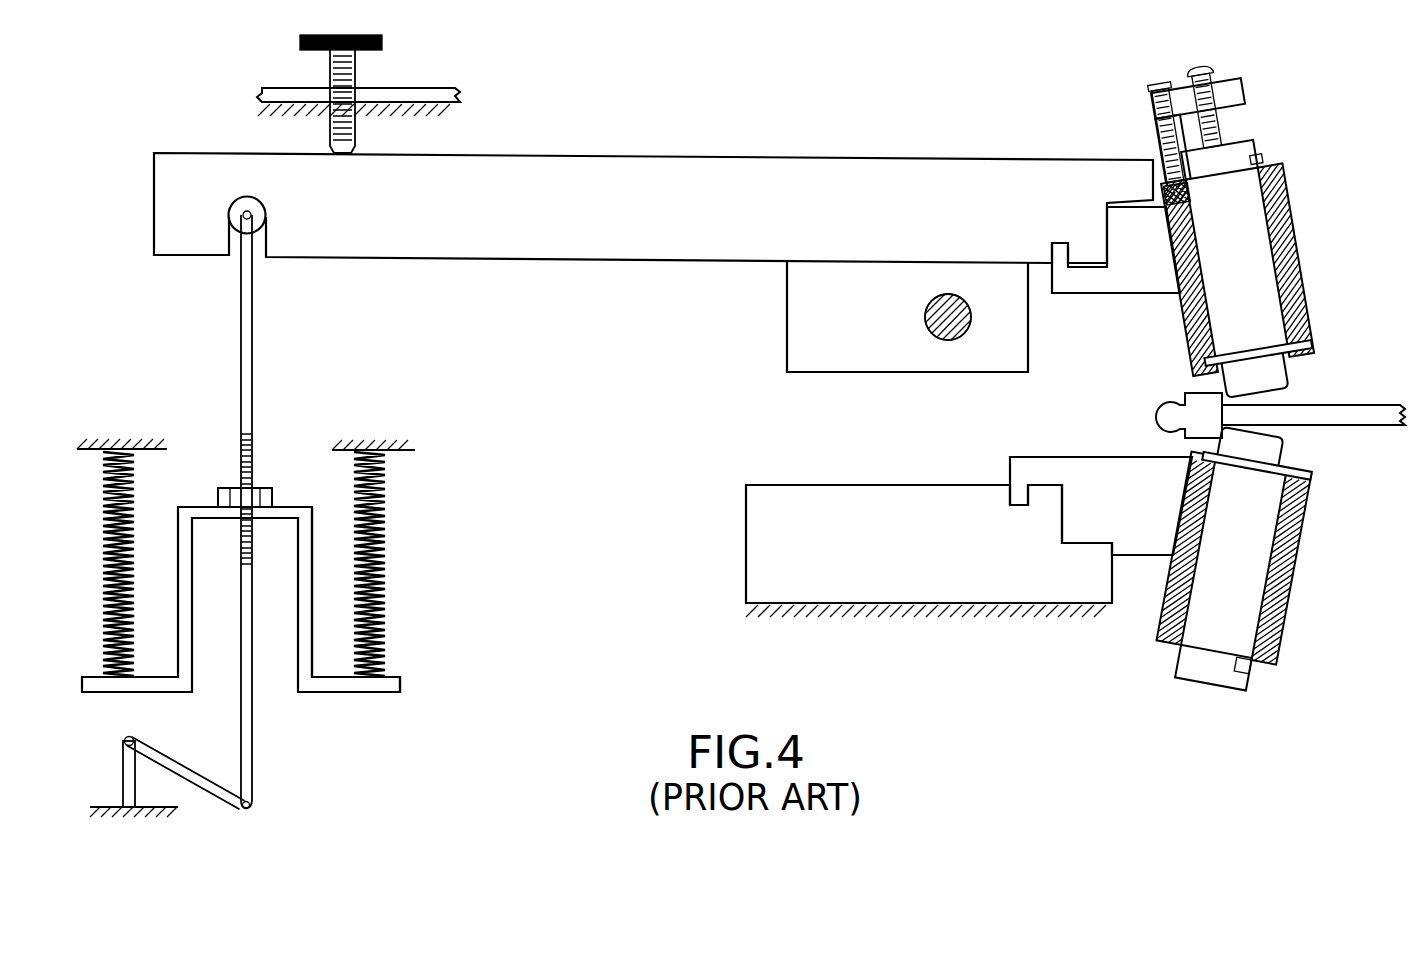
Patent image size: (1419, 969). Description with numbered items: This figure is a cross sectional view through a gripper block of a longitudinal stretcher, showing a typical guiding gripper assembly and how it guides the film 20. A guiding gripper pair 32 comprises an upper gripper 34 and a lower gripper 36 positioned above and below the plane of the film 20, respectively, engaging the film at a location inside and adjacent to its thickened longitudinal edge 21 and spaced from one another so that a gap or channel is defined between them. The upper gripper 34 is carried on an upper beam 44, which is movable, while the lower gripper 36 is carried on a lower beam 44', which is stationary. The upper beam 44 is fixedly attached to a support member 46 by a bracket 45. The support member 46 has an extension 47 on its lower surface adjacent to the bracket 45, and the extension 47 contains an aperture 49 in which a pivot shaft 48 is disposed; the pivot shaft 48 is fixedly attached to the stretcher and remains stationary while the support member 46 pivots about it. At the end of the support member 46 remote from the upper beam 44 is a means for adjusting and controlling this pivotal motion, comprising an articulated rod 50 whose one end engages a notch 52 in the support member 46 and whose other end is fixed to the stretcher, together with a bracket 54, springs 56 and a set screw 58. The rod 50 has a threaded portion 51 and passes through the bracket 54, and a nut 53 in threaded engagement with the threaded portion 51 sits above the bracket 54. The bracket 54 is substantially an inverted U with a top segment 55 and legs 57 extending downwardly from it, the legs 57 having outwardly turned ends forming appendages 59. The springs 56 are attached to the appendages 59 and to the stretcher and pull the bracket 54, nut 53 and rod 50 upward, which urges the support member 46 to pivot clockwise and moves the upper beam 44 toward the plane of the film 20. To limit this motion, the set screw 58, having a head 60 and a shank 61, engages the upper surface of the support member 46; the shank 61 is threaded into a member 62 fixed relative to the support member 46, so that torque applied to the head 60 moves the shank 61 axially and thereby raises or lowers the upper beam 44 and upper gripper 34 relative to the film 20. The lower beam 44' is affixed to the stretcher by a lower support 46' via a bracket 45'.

The film 20 is at (1386, 416).
The thickened longitudinal edge 21 is at (1178, 404).
The guiding gripper pair 32 is at (857, 104).
The upper gripper 34 is at (1317, 380).
The lower gripper 36 is at (1317, 450).
The upper beam 44 is at (1249, 216).
The lower beam 44' is at (1256, 573).
The bracket 45 is at (1116, 250).
The bracket 45' is at (1101, 506).
The support member 46 is at (653, 208).
The lower support 46' is at (929, 551).
The extension 47 is at (861, 327).
The pivot shaft 48 is at (928, 328).
The aperture 49 is at (972, 330).
The articulated rod 50 is at (255, 325).
The threaded portion 51 is at (253, 455).
The notch 52 is at (268, 238).
The nut 53 is at (227, 487).
The bracket 54 is at (241, 559).
The top segment 55 is at (284, 516).
The springs 56 is at (135, 491).
The legs 57 is at (307, 627).
The set screw 58 is at (376, 94).
The appendages 59 is at (333, 689).
The head 60 is at (303, 47).
The shank 61 is at (356, 118).
The member 62 is at (428, 90).